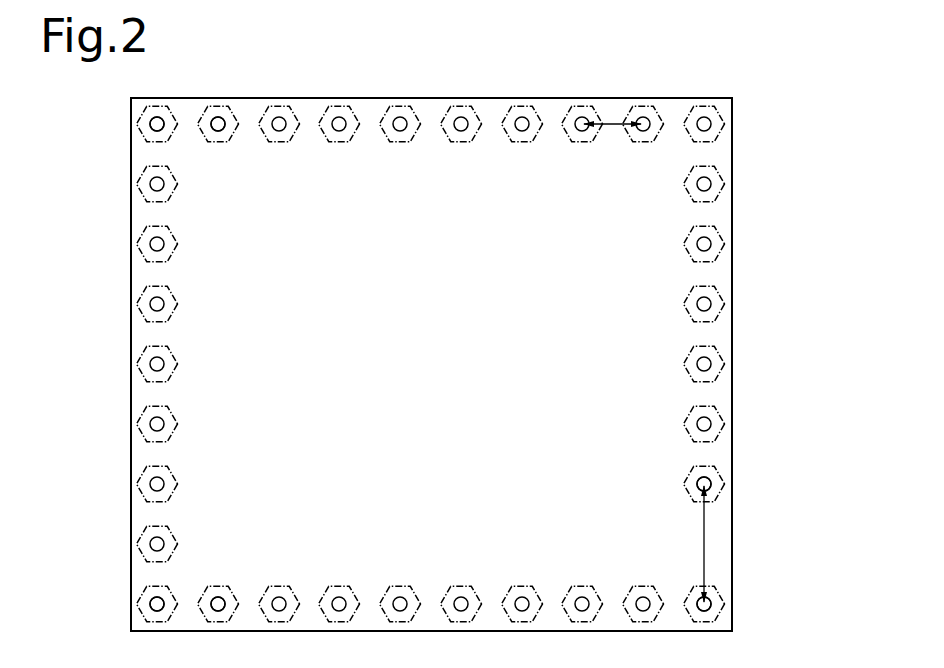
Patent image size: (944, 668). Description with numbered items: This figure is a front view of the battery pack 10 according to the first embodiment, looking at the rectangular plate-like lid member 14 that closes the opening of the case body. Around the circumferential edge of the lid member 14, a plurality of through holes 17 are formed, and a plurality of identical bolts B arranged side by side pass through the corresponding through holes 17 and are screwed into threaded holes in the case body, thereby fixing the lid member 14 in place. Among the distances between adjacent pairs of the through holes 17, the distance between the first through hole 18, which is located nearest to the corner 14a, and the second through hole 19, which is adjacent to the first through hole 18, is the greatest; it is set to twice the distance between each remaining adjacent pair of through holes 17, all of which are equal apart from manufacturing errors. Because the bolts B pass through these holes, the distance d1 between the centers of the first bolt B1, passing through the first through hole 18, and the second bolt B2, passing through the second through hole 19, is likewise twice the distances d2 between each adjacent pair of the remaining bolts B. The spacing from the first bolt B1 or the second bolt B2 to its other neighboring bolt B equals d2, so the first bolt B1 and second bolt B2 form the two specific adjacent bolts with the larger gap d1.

The battery pack 10 is at (798, 134).
The lid member 14 is at (131, 173).
The corner 14a is at (734, 631).
The through holes 17 is at (707, 181).
The first through hole 18 is at (710, 607).
The second through hole 19 is at (708, 484).
The bolts B is at (172, 112).
The first bolt B1 is at (704, 623).
The second bolt B2 is at (706, 466).
The distance between first bolt and second bolt d1 is at (689, 544).
The distance between remaining bolts d2 is at (612, 141).